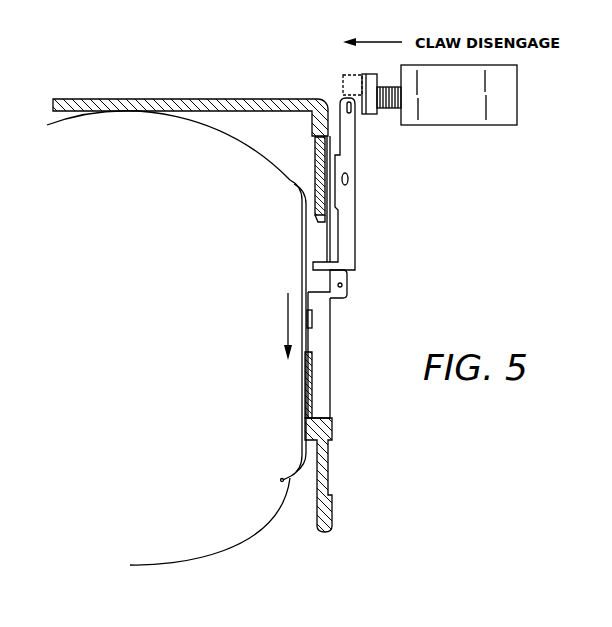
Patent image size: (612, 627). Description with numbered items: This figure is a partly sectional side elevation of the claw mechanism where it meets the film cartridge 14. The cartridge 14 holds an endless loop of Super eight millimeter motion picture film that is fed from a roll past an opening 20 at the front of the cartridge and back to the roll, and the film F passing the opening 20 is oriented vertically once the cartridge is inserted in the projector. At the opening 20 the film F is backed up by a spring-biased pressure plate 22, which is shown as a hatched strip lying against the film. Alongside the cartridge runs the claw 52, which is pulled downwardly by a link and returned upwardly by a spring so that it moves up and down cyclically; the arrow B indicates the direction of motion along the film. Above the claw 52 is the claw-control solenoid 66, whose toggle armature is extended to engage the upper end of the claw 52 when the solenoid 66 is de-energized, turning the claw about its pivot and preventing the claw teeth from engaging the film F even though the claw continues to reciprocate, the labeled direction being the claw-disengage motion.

The film cartridge 14 is at (235, 94).
The pressure plate 22 is at (300, 248).
The claw 52 is at (356, 255).
The opening 20 is at (312, 340).
The claw-control solenoid 66 is at (447, 117).
The film F is at (240, 146).
The film transport direction B is at (286, 327).